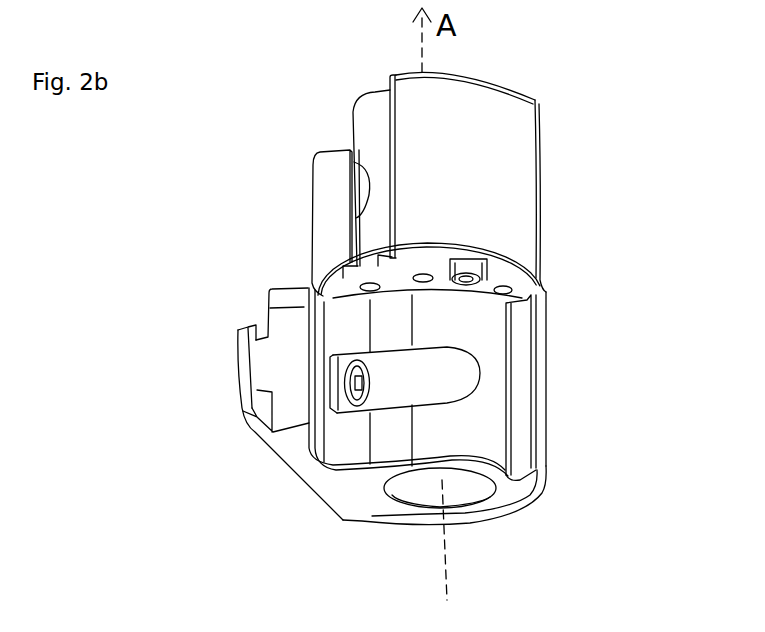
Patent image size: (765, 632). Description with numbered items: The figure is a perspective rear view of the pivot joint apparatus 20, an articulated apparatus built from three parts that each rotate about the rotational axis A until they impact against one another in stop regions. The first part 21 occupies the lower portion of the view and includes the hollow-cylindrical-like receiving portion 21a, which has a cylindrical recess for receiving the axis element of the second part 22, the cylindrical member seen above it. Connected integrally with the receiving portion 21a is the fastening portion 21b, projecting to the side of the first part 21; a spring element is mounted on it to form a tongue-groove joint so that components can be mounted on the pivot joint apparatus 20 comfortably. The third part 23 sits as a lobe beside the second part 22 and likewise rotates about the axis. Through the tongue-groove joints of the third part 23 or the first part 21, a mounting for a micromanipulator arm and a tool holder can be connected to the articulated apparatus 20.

The pivot joint apparatus 20 is at (658, 69).
The first part 21 is at (313, 475).
The receiving portion 21a is at (372, 502).
The fastening portion 21b is at (283, 315).
The second part 22 is at (528, 205).
The third part 23 is at (315, 166).